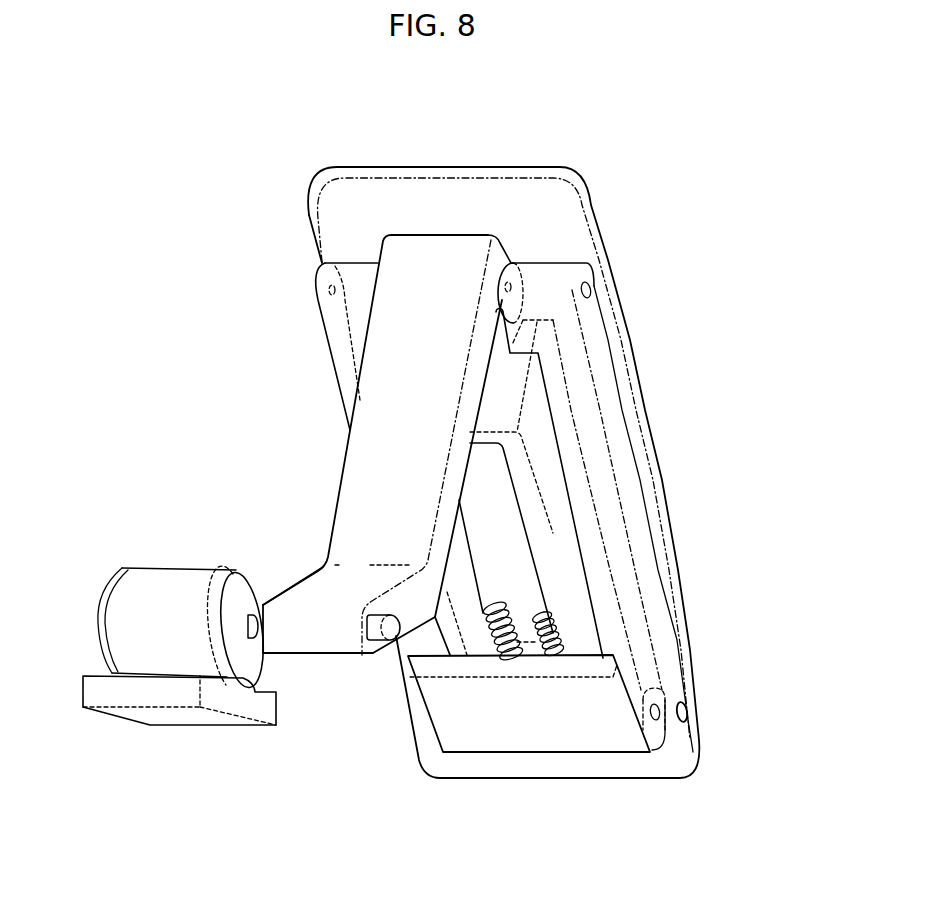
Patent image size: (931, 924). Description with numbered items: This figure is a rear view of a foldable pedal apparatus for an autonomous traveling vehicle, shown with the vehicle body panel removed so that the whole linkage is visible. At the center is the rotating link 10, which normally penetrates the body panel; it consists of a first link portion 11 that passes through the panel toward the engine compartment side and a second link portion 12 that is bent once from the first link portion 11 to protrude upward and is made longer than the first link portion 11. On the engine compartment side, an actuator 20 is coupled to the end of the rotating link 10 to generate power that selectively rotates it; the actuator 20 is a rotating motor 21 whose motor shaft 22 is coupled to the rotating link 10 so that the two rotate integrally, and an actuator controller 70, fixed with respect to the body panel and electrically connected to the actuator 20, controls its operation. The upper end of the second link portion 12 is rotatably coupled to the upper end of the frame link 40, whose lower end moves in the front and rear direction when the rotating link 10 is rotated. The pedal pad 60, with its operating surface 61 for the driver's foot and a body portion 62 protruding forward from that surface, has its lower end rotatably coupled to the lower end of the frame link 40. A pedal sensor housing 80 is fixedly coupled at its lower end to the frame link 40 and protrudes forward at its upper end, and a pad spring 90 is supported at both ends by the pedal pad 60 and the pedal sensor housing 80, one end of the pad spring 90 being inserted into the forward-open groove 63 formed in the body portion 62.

The rotating link 10 is at (334, 486).
The first link portion 11 is at (312, 634).
The second link portion 12 is at (390, 415).
The actuator 20 is at (120, 556).
The rotating motor 21 is at (160, 594).
The motor shaft 22 is at (378, 630).
The frame link 40 is at (595, 420).
The pedal pad 60 is at (587, 166).
The operating surface 61 is at (450, 195).
The body portion 62 is at (555, 490).
The groove 63 is at (510, 540).
The actuator controller 70 is at (125, 697).
The pedal sensor housing 80 is at (530, 733).
The pad spring 90 is at (518, 625).